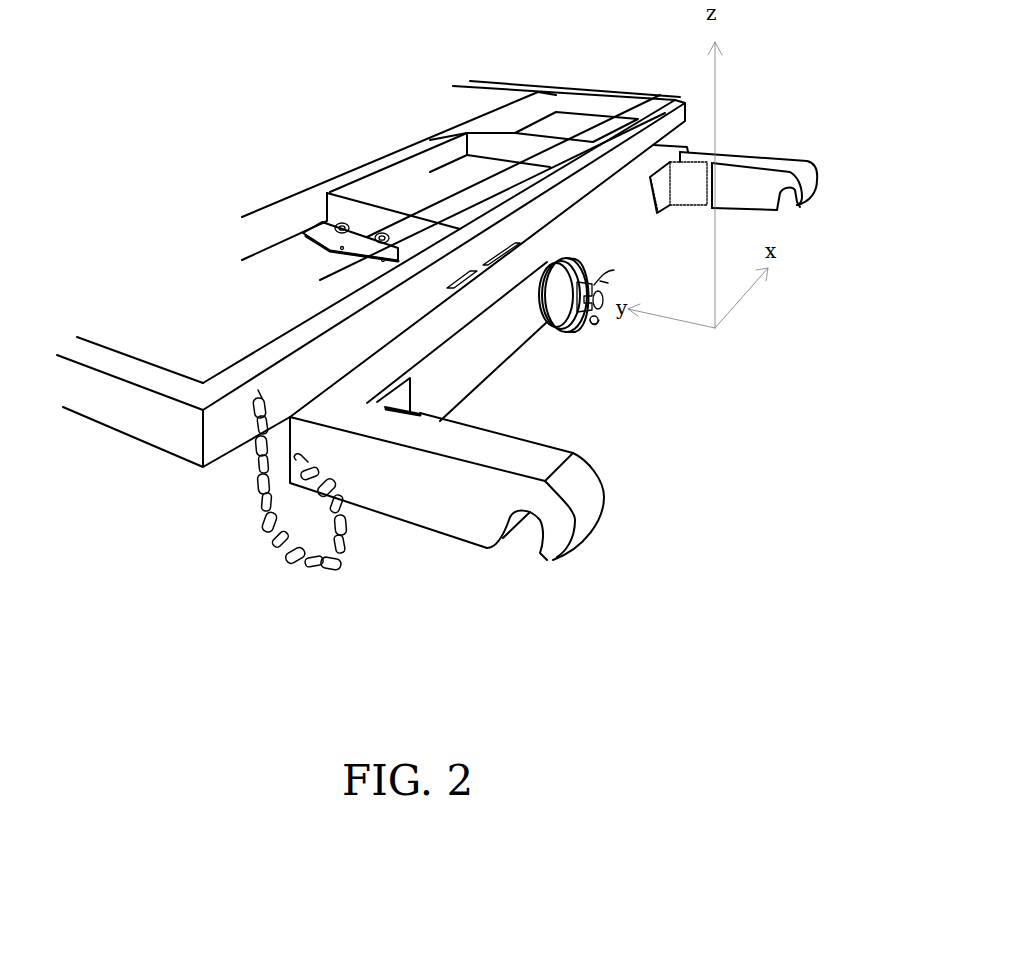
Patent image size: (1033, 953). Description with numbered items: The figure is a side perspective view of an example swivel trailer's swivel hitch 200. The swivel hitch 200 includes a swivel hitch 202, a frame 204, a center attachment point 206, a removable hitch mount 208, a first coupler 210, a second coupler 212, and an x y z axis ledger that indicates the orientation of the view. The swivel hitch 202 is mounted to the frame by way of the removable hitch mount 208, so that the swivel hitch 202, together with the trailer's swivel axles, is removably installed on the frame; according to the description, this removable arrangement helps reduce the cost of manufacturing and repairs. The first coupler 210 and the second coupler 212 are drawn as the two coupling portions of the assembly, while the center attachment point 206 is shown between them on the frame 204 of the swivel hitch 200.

The swivel hitch 200 is at (182, 37).
The swivel hitch 202 is at (472, 382).
The frame 204 is at (690, 98).
The center attachment point 206 is at (611, 271).
The removable hitch mount 208 is at (358, 263).
The first coupler 210 is at (508, 556).
The second coupler 212 is at (790, 208).